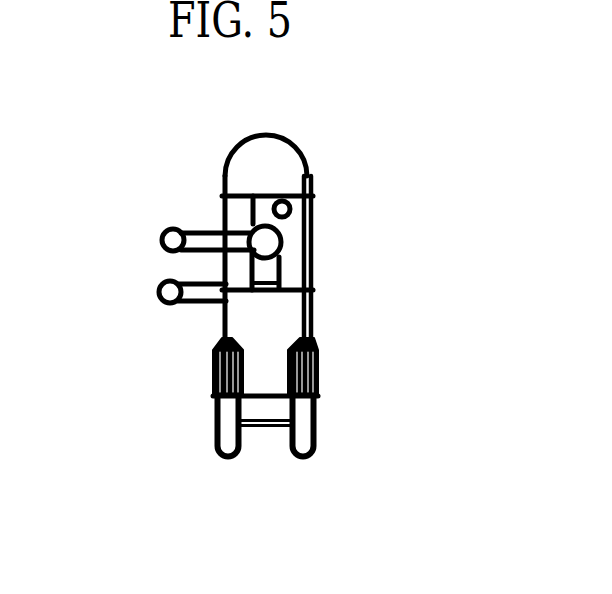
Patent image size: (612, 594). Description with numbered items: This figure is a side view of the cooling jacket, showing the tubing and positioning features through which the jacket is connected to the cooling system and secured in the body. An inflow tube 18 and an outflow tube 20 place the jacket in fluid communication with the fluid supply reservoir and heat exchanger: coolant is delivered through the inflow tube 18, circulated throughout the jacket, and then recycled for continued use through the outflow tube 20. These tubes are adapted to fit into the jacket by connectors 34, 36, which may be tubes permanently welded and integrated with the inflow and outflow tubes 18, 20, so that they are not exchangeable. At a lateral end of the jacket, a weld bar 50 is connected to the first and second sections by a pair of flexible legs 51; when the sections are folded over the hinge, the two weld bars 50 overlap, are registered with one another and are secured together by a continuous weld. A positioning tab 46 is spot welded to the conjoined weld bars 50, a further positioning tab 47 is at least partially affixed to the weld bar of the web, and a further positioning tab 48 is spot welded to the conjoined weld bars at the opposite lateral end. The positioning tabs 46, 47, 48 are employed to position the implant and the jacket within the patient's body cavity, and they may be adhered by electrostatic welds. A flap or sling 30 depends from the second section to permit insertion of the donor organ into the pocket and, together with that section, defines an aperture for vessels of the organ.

The inflow tube 18 is at (213, 440).
The outflow tube 20 is at (318, 433).
The sling 30 is at (294, 140).
The connector 34 is at (212, 367).
The connector 36 is at (318, 357).
The positioning tab 46 is at (176, 226).
The positioning tab 47 is at (172, 281).
The positioning tab 48 is at (213, 424).
The weld bar 50 is at (266, 217).
The flexible legs 51 is at (231, 160).